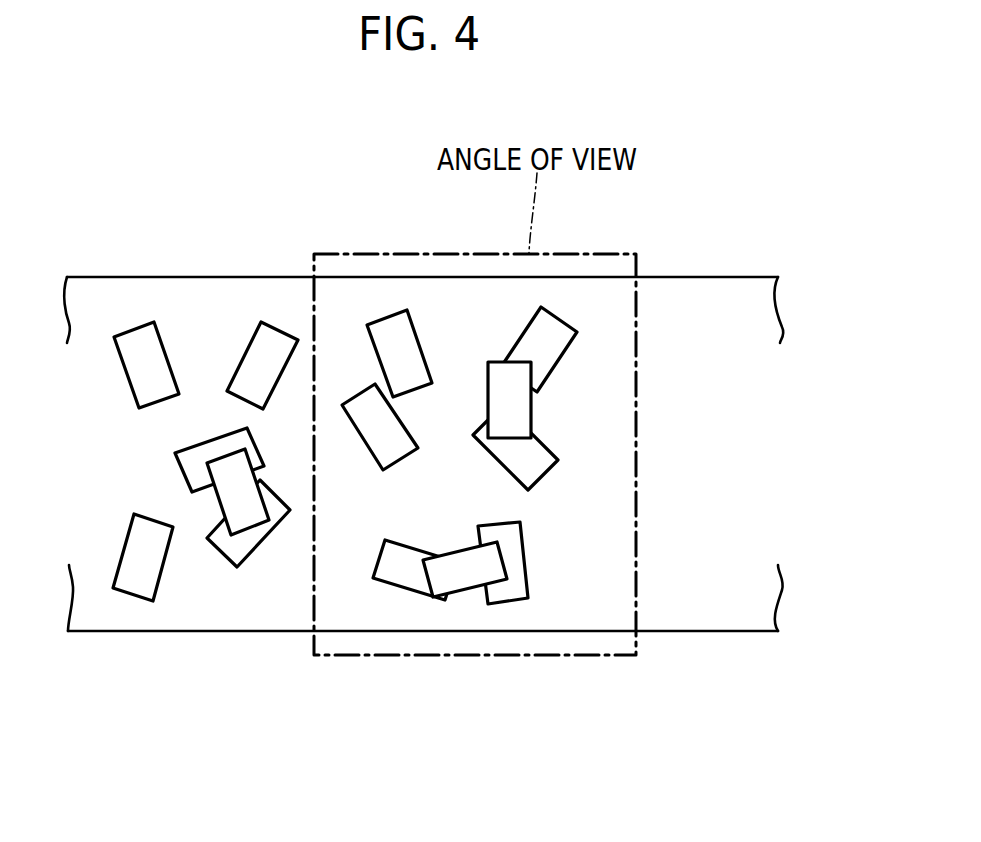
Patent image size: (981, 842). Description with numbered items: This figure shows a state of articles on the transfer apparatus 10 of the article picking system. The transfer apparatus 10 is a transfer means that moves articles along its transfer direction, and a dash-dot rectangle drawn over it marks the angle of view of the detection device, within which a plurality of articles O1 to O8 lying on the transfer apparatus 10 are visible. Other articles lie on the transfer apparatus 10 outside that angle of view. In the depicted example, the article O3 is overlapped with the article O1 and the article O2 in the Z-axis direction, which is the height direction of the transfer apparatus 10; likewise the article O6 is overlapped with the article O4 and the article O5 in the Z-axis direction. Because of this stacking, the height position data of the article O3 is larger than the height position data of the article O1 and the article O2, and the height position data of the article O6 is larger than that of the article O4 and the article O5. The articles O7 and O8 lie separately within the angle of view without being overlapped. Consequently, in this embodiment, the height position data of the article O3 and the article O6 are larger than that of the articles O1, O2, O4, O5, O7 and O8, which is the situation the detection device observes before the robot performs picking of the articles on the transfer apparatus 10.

The transfer apparatus 10 is at (709, 277).
The article O1 is at (568, 345).
The article O2 is at (553, 450).
The article O3 is at (531, 413).
The article O4 is at (512, 605).
The article O5 is at (403, 588).
The article O6 is at (463, 592).
The article O7 is at (359, 393).
The article O8 is at (386, 318).